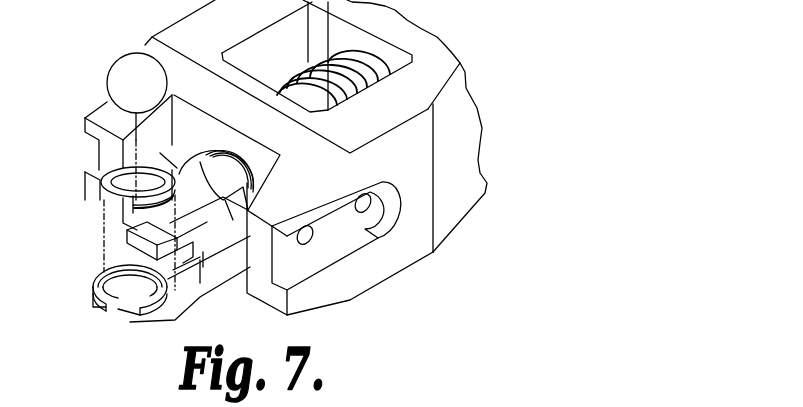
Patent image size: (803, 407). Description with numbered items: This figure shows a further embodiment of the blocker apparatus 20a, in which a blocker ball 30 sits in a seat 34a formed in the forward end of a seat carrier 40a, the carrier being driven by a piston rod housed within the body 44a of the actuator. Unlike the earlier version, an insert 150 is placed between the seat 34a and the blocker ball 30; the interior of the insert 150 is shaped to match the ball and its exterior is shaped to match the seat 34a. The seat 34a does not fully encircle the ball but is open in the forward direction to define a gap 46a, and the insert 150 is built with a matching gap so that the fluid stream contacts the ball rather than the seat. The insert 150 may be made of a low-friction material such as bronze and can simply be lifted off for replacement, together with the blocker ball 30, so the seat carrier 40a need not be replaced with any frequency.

The blocker apparatus 20a is at (118, 31).
The blocker ball 30 is at (110, 70).
The insert 150 is at (110, 172).
The seat 34a is at (100, 272).
The seat carrier 40a is at (220, 215).
The body 44a is at (452, 224).
The gap 46a is at (119, 308).